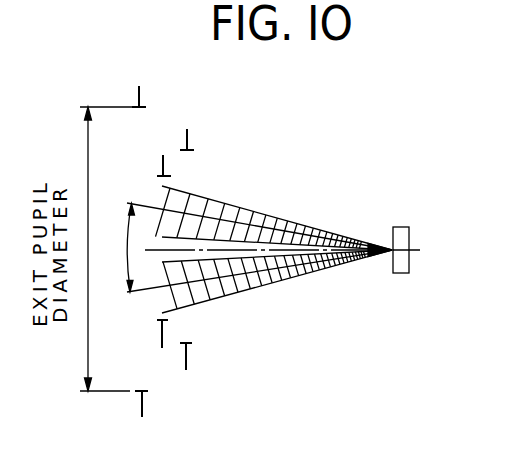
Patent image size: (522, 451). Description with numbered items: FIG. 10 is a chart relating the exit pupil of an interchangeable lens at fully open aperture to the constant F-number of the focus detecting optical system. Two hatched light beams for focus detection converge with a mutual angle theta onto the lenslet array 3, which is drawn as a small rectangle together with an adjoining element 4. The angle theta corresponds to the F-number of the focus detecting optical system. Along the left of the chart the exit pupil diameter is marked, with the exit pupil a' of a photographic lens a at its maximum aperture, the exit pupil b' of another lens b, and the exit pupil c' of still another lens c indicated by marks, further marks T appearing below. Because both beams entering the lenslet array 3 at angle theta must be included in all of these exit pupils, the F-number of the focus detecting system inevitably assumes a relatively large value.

The lenslet array 3 is at (399, 224).
The eyepiece lens element 4 is at (404, 232).
The photographic lens a is at (130, 94).
The another lens b is at (158, 165).
The still another lens c is at (180, 136).
The T marks T is at (163, 368).
The angle theta is at (121, 248).